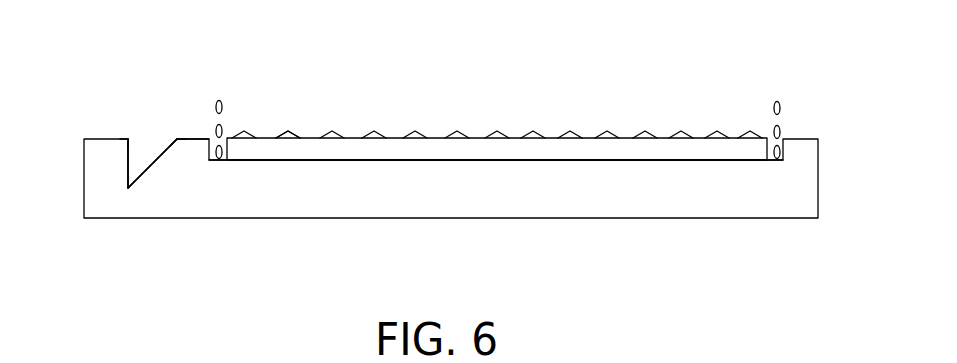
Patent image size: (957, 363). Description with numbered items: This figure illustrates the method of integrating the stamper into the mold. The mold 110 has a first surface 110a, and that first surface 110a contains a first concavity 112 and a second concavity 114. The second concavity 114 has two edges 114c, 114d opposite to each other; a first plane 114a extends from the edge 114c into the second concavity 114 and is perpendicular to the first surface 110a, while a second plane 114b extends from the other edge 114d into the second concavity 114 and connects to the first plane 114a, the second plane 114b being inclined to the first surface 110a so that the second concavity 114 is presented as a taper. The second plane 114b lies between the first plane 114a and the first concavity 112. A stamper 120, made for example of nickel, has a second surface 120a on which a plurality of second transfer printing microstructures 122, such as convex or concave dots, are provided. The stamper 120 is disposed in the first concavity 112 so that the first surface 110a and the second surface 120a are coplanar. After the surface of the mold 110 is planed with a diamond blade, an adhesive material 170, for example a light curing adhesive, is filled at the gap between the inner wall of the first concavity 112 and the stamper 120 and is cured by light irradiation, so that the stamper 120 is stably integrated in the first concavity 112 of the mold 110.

The mold 110 is at (728, 192).
The first surface 110a is at (197, 138).
The first concavity 112 is at (473, 170).
The second concavity 114 is at (156, 176).
The first plane 114a is at (127, 168).
The second plane 114b is at (168, 152).
The edge 114c is at (130, 128).
The edge 114d is at (177, 138).
The stamper 120 is at (615, 157).
The second surface 120a is at (331, 136).
The second transfer printing microstructures 122 is at (292, 135).
The adhesive material 170 is at (222, 106).